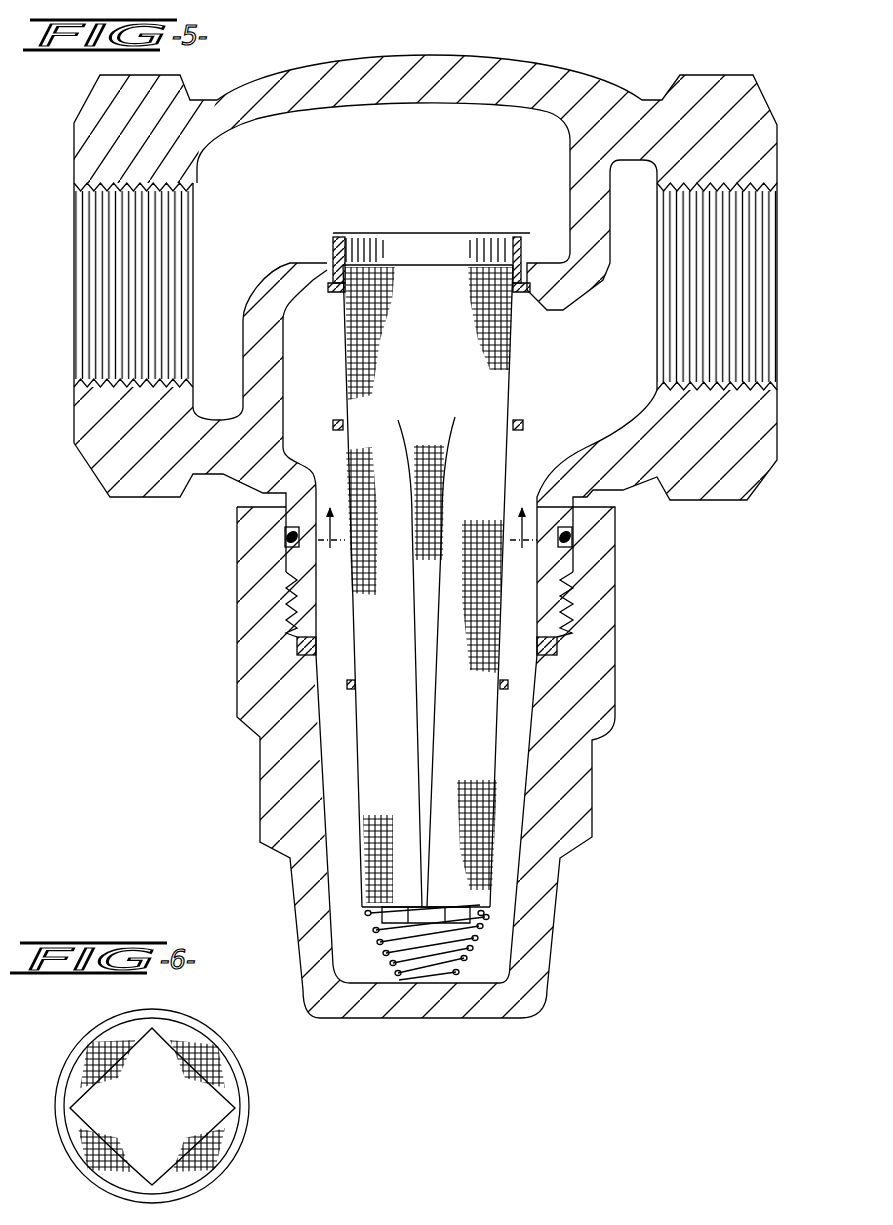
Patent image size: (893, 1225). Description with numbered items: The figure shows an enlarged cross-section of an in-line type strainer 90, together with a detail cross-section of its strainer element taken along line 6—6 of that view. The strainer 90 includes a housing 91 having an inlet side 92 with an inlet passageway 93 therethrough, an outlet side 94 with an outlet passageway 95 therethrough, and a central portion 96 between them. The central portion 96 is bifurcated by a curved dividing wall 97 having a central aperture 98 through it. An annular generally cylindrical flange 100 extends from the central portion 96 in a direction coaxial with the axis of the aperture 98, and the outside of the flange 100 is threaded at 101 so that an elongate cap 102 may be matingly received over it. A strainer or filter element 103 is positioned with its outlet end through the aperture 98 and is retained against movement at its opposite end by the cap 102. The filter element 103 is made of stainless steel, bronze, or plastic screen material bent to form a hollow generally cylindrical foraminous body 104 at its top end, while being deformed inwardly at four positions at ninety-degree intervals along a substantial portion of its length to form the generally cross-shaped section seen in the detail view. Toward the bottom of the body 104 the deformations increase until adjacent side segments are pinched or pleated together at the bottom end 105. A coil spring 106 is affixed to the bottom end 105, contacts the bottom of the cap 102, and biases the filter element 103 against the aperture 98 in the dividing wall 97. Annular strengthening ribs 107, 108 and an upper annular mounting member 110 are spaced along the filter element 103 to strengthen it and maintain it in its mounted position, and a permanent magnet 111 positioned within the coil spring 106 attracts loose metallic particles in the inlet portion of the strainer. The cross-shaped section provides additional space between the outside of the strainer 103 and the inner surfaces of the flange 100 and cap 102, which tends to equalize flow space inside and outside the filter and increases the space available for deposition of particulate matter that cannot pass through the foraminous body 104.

In FIG. 5, the in-line type strainer 90 is at (618, 78).
In FIG. 5, the housing 91 is at (228, 480).
In FIG. 5, the inlet side 92 is at (765, 138).
In FIG. 5, the inlet passageway 93 is at (672, 190).
In FIG. 5, the outlet side 94 is at (88, 128).
In FIG. 5, the outlet passageway 95 is at (88, 232).
In FIG. 5, the central portion 96 is at (455, 72).
In FIG. 5, the curved dividing wall 97 is at (256, 290).
In FIG. 5, the central aperture 98 is at (345, 280).
In FIG. 5, the annular generally cylindrical flange 100 is at (562, 580).
In FIG. 5, the threads 101 is at (572, 620).
In FIG. 5, the elongate cap 102 is at (568, 805).
In FIG. 5, the strainer or filter element 103 is at (464, 226).
In FIG. 5, the foraminous body 104 is at (512, 406).
In FIG. 6, the foraminous body 104 is at (100, 1068).
In FIG. 5, the bottom end 105 is at (458, 908).
In FIG. 5, the coil spring 106 is at (460, 965).
In FIG. 5, the annular strengthening rib 107 is at (510, 684).
In FIG. 5, the annular strengthening rib 108 is at (523, 425).
In FIG. 6, the annular strengthening rib 108 is at (232, 1053).
In FIG. 5, the upper annular mounting member 110 is at (513, 258).
In FIG. 5, the permanent magnet 111 is at (392, 912).
In FIG. 5, the line 6— 6 is at (427, 546).